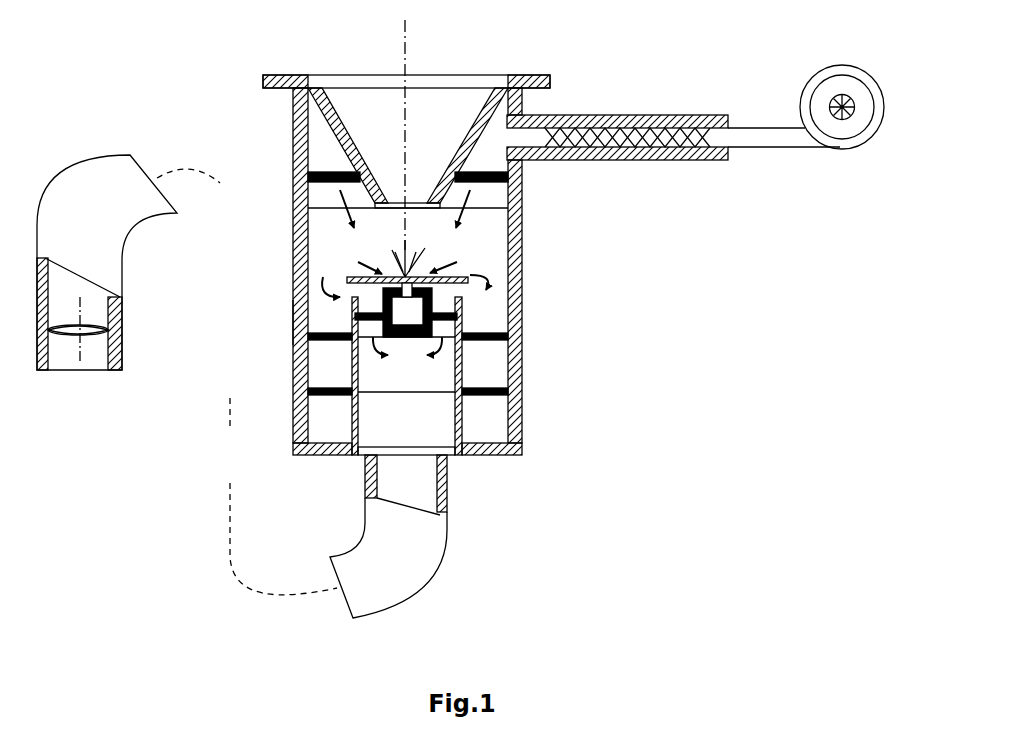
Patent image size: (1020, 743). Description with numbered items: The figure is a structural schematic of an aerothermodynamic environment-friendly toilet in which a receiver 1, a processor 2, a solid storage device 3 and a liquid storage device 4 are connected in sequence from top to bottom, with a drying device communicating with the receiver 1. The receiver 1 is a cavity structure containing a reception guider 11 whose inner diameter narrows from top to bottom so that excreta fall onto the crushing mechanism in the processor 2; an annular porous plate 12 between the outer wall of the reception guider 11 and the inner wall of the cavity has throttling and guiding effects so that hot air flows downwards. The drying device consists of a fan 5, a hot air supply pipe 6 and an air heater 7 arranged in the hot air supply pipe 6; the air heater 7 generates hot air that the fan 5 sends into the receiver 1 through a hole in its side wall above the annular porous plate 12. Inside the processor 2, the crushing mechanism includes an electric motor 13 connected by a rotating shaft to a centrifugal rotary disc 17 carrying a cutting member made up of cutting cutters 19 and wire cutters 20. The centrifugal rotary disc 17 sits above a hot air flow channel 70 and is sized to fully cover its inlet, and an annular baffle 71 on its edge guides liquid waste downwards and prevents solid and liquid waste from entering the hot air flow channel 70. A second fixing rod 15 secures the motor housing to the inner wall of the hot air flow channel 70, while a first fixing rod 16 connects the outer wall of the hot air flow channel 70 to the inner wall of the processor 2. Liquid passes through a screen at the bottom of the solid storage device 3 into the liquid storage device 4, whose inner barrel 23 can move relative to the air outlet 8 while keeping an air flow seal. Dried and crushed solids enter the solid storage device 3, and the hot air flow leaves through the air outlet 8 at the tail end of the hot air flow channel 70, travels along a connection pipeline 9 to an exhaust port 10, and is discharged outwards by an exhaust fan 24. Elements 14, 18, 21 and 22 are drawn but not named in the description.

The receiver 1 is at (293, 127).
The processor 2 is at (422, 262).
The solid storage device 3 is at (512, 358).
The liquid storage device 4 is at (522, 422).
The fan 5 is at (818, 98).
The hot air supply pipe 6 is at (682, 117).
The air heater 7 is at (622, 122).
The air outlet 8 is at (445, 498).
The connection pipeline 9 is at (227, 412).
The exhaust port 10 is at (42, 266).
The reception guider 11 is at (350, 142).
The annular porous plate 12 is at (457, 160).
The electric motor 13 is at (455, 317).
The connecting bar 14 is at (457, 308).
The second fixing rod 15 is at (372, 308).
The first fixing rod 16 is at (323, 330).
The centrifugal rotary disc 17 is at (467, 282).
The air swirl right 18 is at (472, 290).
The cutting cutter 19 is at (440, 268).
The wire cutter 20 is at (415, 272).
The wall section 21 is at (293, 320).
The lower screen 22 is at (352, 362).
The inner barrel 23 is at (357, 425).
The exhaust fan 24 is at (108, 325).
The hot air flow channel 70 is at (432, 378).
The annular baffle 71 is at (350, 283).